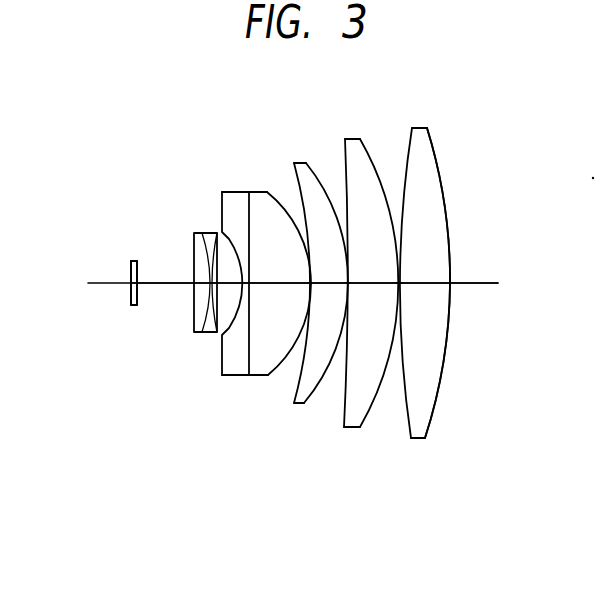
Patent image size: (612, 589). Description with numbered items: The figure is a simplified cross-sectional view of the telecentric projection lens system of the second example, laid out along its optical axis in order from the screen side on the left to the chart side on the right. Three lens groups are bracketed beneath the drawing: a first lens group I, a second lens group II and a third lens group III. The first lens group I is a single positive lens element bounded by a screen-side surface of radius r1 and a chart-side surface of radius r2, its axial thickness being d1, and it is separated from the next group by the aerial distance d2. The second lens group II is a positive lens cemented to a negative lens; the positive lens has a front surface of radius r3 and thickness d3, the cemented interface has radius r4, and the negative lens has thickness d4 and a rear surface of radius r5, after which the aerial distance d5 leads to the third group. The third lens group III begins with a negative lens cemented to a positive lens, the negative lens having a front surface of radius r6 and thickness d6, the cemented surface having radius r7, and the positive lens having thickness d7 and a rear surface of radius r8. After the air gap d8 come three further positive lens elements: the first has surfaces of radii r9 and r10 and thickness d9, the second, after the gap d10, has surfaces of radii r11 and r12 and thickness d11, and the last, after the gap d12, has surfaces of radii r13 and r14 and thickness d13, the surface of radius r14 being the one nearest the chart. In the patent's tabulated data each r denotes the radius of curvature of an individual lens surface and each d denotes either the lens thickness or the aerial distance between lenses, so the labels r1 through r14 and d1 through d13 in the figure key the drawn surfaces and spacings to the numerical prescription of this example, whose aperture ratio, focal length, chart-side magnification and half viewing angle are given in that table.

The radius of curvature of the first surface r1 is at (130, 263).
The radius of curvature of the second surface r2 is at (139, 263).
The radius of curvature of the third surface r3 is at (194, 240).
The radius of curvature of the fourth surface r4 is at (205, 233).
The radius of curvature of the fifth surface r5 is at (229, 240).
The radius of curvature of the sixth surface r6 is at (250, 192).
The radius of curvature of the seventh surface r7 is at (267, 192).
The radius of curvature of the eighth surface r8 is at (292, 182).
The radius of curvature of the ninth surface r9 is at (306, 163).
The radius of curvature of the tenth surface r10 is at (346, 157).
The radius of curvature of the eleventh surface r11 is at (362, 146).
The radius of curvature of the twelfth surface r12 is at (413, 128).
The radius of curvature of the thirteenth surface r13 is at (428, 132).
The radius of curvature of the fourteenth surface r14 is at (431, 149).
The thickness of the first lens element d1 is at (129, 298).
The aerial distance between first and second lens groups d2 is at (168, 286).
The thickness of the positive lens of the second group d3 is at (196, 308).
The thickness of the negative lens of the second group d4 is at (209, 333).
The aerial distance between second and third lens groups d5 is at (223, 284).
The thickness of the negative lens of the third-group doublet d6 is at (250, 345).
The thickness of the positive lens of the third-group doublet d7 is at (273, 286).
The aerial distance after the cemented doublet d8 is at (329, 286).
The thickness of the first single positive lens of the third group d9 is at (351, 284).
The aerial distance between first and second single positive lenses d10 is at (377, 284).
The thickness of the second single positive lens of the third group d11 is at (401, 286).
The aerial distance between second and third single positive lenses d12 is at (434, 284).
The thickness of the last positive lens of the third group d13 is at (450, 310).
The first lens group I is at (107, 481).
The second lens group II is at (182, 481).
The third lens group III is at (530, 481).